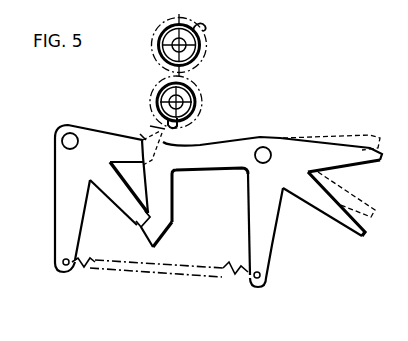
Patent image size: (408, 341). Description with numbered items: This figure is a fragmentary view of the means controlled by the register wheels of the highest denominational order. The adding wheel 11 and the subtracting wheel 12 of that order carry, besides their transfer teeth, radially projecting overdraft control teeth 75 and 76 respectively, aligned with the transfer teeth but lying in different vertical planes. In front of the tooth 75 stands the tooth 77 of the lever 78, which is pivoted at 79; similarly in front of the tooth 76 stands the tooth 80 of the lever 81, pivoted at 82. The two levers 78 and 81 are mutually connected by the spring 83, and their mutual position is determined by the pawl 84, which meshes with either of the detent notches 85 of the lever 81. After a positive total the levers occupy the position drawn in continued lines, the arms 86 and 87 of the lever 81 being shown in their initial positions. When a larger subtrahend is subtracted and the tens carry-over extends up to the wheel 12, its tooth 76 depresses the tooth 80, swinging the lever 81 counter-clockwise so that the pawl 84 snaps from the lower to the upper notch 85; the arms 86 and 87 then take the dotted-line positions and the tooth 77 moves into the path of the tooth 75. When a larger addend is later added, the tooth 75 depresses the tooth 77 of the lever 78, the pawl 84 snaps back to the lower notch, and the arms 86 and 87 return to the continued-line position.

The adding wheel 11 is at (196, 89).
The subtracting wheel 12 is at (165, 22).
The overdraft control tooth 75 is at (180, 128).
The overdraft control tooth 76 is at (205, 28).
The tooth 77 is at (143, 133).
The lever 78 is at (100, 140).
The pivot 79 is at (67, 132).
The tooth 80 is at (163, 133).
The lever 81 is at (236, 138).
The pivot 82 is at (268, 148).
The spring 83 is at (125, 266).
The pawl 84 is at (122, 197).
The detent notches 85 is at (153, 210).
The arm 86 is at (360, 157).
The arm 87 is at (355, 222).